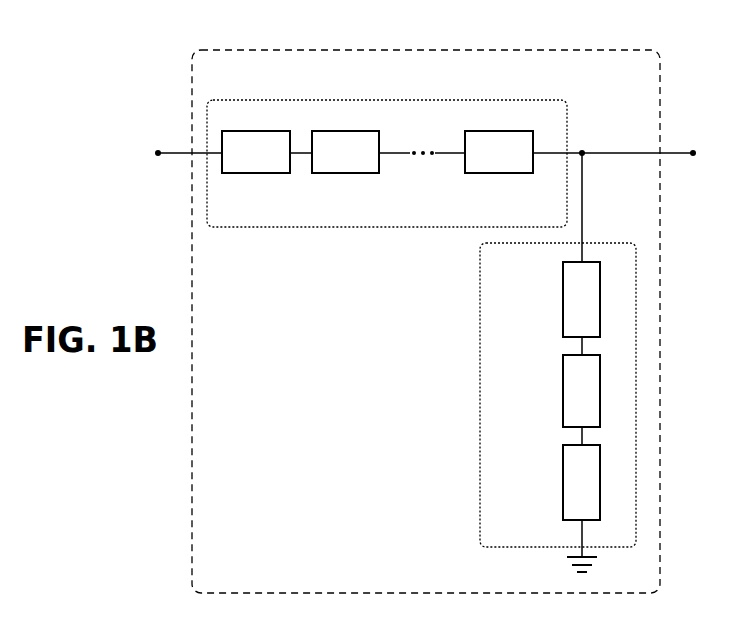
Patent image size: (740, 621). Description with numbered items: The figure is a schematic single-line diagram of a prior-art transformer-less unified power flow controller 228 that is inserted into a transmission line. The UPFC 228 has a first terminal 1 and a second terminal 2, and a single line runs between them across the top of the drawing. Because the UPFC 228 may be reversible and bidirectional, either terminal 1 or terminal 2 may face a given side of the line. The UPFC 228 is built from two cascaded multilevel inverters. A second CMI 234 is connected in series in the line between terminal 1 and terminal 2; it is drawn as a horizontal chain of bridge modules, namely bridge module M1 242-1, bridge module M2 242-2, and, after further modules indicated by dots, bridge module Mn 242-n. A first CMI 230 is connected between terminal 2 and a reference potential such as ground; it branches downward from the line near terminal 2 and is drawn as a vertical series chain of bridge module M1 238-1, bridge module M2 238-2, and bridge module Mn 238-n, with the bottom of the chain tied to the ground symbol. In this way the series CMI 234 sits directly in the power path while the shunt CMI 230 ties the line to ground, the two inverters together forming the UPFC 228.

The unified power flow controller 228 is at (458, 48).
The second cascaded multilevel inverter 234 is at (430, 230).
The first cascaded multilevel inverter 230 is at (478, 332).
The bridge module M1 242-1 is at (247, 173).
The bridge module M2 242-2 is at (345, 173).
The bridge module Mn 242-n is at (477, 173).
The bridge module M1 238-1 is at (563, 284).
The bridge module M2 238-2 is at (563, 384).
The bridge module Mn 238-n is at (563, 480).
The first terminal 1 is at (159, 165).
The second terminal 2 is at (694, 165).